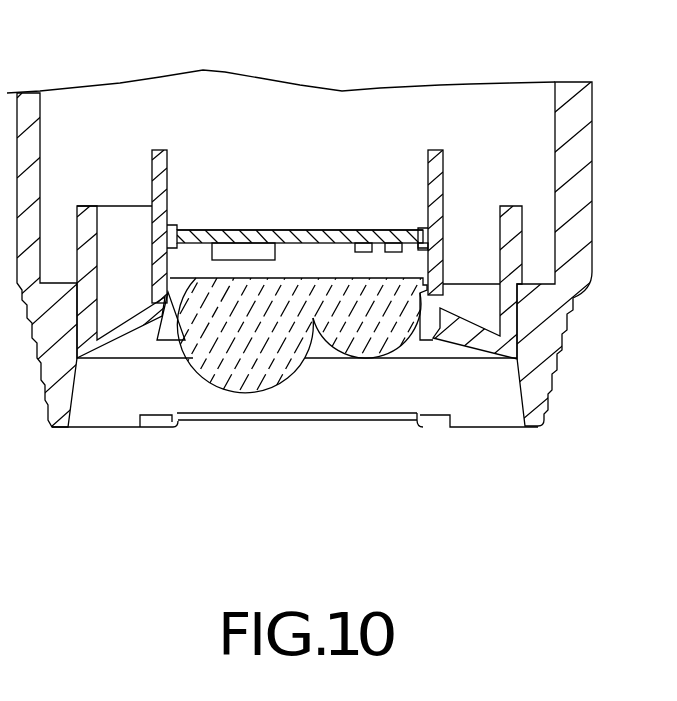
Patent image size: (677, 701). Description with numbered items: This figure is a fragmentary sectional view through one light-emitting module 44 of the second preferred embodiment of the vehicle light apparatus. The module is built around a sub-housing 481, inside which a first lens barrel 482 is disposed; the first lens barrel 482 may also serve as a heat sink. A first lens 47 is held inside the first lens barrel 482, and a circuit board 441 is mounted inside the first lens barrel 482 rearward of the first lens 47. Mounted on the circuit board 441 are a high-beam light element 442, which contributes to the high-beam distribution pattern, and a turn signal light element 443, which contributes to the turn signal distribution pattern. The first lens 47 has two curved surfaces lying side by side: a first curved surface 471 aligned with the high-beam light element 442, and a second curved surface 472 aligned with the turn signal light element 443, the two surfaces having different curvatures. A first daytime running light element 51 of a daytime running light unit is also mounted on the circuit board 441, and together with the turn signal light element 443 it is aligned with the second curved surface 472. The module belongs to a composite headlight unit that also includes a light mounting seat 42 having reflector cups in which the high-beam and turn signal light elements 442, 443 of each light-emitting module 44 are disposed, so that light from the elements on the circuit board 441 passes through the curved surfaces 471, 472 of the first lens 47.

The light mounting seat 42 is at (462, 330).
The light-emitting module 44 is at (313, 206).
The circuit board 441 is at (338, 237).
The high-beam light element 442 is at (242, 253).
The turn signal light element 443 is at (368, 245).
The first lens 47 is at (273, 395).
The first curved surface 471 is at (247, 390).
The second curved surface 472 is at (408, 318).
The sub-housing 481 is at (547, 348).
The first lens barrel 482 is at (142, 295).
The first daytime running light element 51 is at (393, 250).